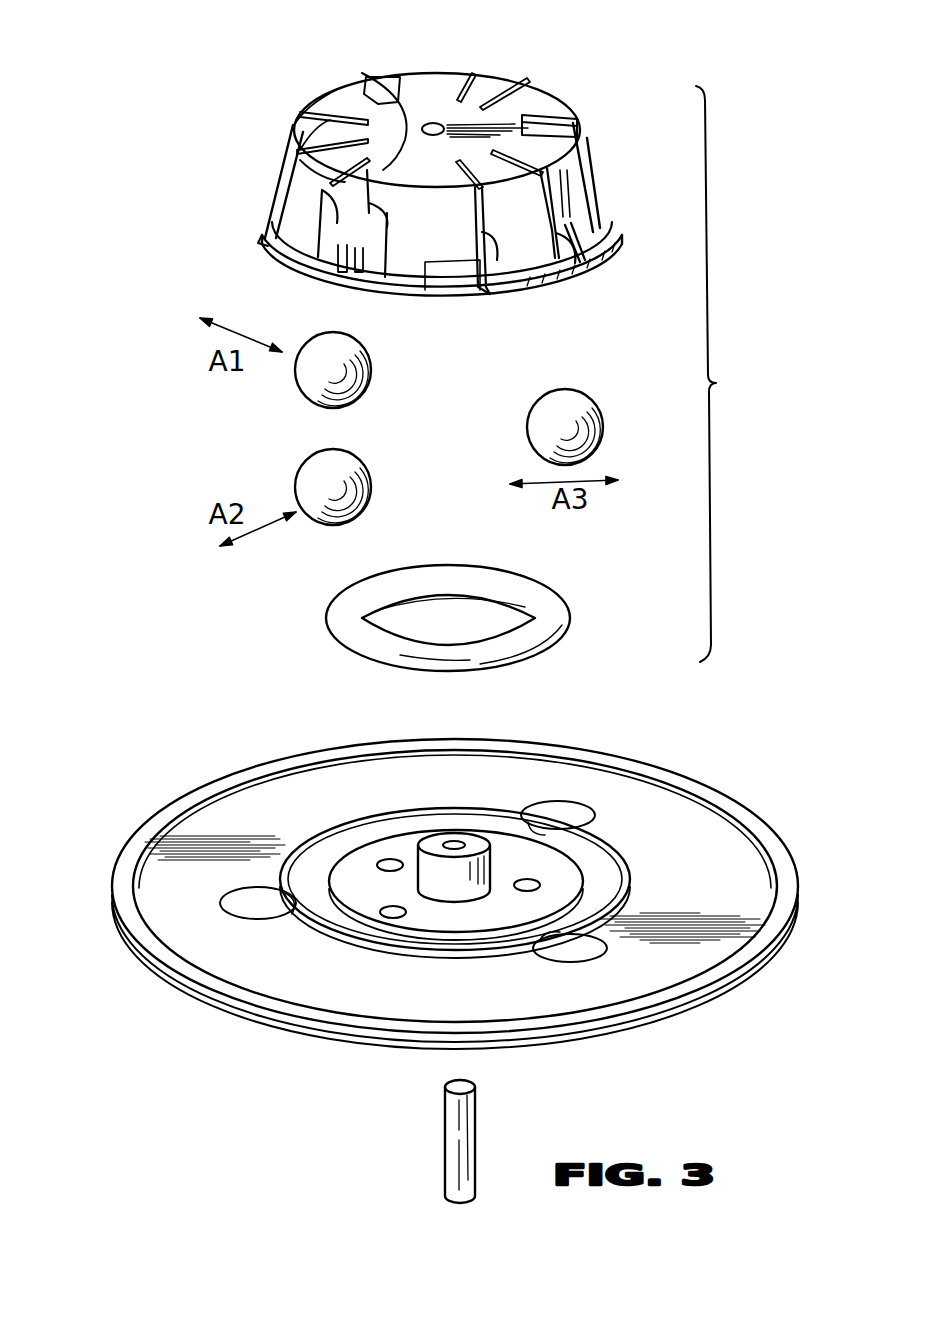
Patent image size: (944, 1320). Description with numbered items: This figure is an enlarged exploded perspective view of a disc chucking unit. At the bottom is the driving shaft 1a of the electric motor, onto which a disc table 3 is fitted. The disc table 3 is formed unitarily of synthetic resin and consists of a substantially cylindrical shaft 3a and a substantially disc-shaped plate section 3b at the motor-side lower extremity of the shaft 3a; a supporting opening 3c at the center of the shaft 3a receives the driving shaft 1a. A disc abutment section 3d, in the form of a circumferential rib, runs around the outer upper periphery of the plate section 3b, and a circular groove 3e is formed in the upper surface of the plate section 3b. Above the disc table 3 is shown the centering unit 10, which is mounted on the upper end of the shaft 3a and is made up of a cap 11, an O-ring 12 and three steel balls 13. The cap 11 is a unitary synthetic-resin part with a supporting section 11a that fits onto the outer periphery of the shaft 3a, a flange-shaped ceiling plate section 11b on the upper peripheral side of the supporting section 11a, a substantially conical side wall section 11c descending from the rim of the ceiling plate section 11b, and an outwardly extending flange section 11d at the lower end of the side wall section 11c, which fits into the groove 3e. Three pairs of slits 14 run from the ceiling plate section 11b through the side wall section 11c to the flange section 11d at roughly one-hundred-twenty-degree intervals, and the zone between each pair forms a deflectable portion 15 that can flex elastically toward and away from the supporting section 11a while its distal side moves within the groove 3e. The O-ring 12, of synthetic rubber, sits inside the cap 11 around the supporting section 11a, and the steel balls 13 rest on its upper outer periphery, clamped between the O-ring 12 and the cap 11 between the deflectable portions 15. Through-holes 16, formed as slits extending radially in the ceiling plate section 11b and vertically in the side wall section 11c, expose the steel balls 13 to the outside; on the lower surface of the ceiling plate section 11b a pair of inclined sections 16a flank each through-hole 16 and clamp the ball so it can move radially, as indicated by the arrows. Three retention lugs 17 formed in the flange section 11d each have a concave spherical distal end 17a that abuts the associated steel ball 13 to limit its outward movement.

The driving shaft 1a is at (463, 1107).
The disc table 3 is at (476, 861).
The shaft 3a is at (445, 883).
The plate section 3b is at (707, 827).
The supporting opening 3c is at (447, 843).
The disc abutment section 3d is at (782, 858).
The circular groove 3e is at (317, 850).
The centering unit 10 is at (752, 396).
The cap 11 is at (447, 192).
The supporting section 11a is at (382, 168).
The ceiling plate section 11b is at (433, 80).
The side wall section 11c is at (590, 158).
The flange section 11d is at (610, 205).
The O-ring 12 is at (489, 578).
The steel balls 13 is at (300, 384).
The slits 14 is at (330, 110).
The deflectable portion 15 is at (284, 176).
The through-holes 16 is at (378, 90).
The inclined sections 16a is at (282, 243).
The retention lugs 17 is at (340, 272).
The distal end 17a is at (362, 275).